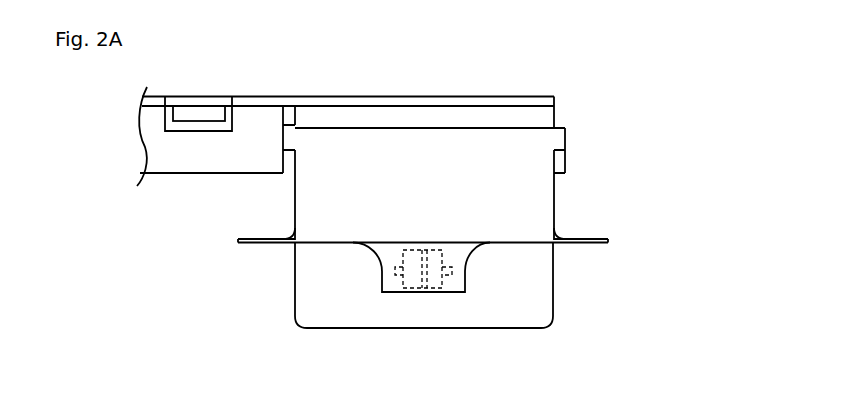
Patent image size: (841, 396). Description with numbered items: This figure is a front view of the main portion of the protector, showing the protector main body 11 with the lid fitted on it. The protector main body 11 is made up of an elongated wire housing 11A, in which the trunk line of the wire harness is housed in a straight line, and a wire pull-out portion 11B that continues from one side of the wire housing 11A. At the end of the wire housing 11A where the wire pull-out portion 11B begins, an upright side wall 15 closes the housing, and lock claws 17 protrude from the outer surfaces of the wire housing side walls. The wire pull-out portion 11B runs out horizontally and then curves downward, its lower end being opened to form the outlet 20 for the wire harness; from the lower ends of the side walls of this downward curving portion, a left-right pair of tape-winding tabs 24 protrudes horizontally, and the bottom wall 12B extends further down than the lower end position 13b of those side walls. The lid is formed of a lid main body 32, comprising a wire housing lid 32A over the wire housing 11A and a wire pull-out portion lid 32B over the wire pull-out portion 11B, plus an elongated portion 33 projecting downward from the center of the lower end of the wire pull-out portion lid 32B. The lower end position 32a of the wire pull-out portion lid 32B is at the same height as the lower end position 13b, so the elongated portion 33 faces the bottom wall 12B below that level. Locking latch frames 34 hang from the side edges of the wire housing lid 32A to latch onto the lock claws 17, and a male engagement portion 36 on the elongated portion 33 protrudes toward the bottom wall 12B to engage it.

The protector main body 11 is at (233, 333).
The wire housing 11A is at (183, 174).
The wire pull-out portion 11B is at (295, 268).
The bottom wall 12B is at (534, 293).
The lower end position 13b is at (553, 246).
The side wall 15 is at (555, 118).
The lock claw 17 is at (195, 113).
The outlet 20 is at (342, 243).
The tape-winding tab 24 is at (262, 238).
The lid main body 32 is at (424, 130).
The wire housing lid 32A is at (439, 74).
The wire pull-out portion lid 32B is at (488, 157).
The lower end position 32a is at (520, 244).
The elongated portion 33 is at (460, 278).
The locking latch frame 34 is at (232, 120).
The male engagement portion 36 is at (422, 283).